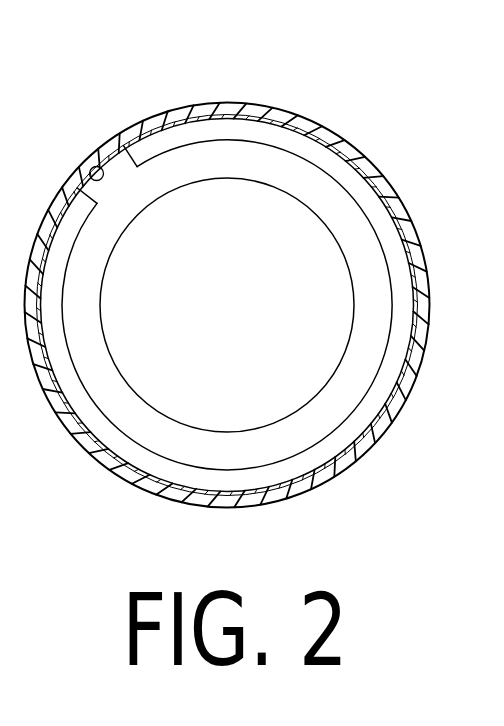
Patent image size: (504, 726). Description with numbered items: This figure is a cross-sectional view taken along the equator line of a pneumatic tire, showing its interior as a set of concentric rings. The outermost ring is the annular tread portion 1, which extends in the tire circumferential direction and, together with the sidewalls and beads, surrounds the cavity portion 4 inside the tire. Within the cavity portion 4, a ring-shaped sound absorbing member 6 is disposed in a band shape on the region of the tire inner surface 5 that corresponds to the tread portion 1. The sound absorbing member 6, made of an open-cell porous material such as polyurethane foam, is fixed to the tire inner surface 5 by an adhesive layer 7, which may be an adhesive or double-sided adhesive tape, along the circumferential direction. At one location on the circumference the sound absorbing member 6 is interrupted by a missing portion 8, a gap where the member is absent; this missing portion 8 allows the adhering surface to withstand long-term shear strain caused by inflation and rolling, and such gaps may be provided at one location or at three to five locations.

The tread portion 1 is at (350, 143).
The cavity portion 4 is at (357, 233).
The tire inner surface 5 is at (95, 164).
The sound absorbing member 6 is at (164, 137).
The adhesive layer 7 is at (231, 117).
The missing portion 8 is at (118, 175).